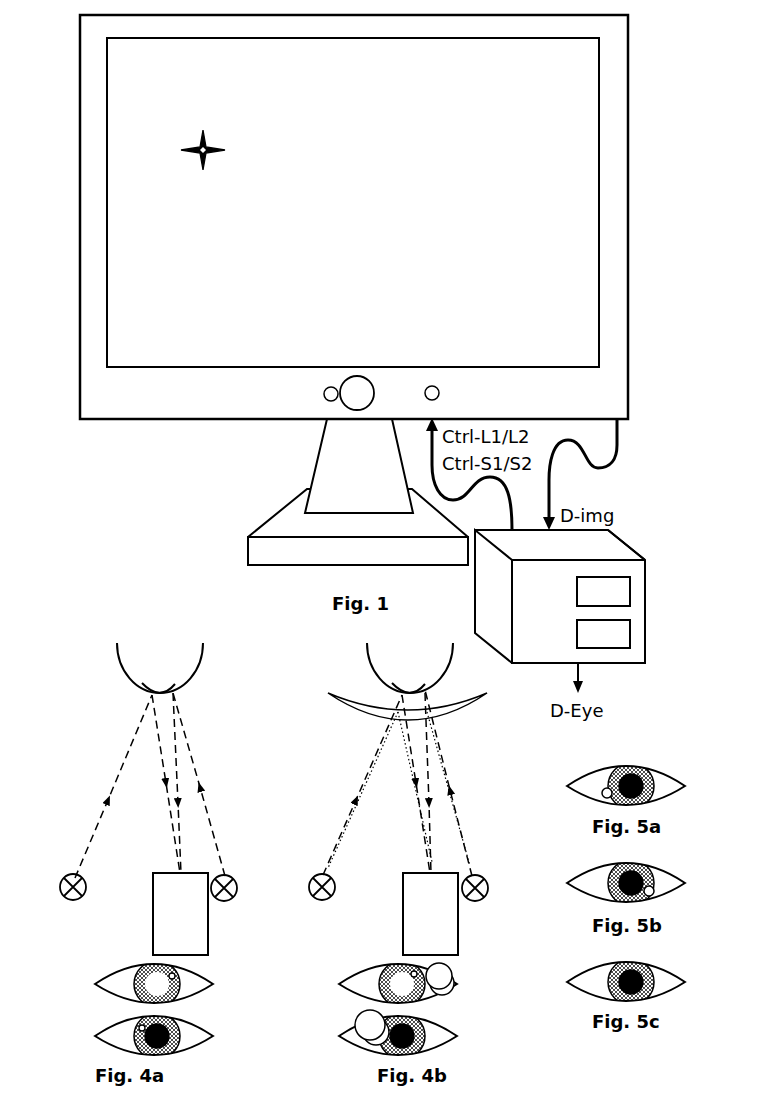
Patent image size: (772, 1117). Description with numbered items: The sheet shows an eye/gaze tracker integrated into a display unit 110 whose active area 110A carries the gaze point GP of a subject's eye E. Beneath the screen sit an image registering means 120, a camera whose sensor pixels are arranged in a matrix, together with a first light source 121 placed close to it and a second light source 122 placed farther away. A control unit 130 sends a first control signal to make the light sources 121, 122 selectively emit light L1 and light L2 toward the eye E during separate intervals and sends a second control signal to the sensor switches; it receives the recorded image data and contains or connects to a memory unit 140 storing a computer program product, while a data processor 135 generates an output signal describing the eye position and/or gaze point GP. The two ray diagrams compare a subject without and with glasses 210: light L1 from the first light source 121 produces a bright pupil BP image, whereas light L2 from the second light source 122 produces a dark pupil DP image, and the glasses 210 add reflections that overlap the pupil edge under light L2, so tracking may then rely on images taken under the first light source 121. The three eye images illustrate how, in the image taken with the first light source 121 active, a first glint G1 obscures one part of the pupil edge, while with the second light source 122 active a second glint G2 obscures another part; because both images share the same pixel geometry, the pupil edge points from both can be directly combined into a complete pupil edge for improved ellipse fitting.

In FIG. 1, the display unit 110 is at (354, 290).
In FIG. 1, the active area 110A is at (416, 202).
In FIG. 1, the gaze point GP is at (230, 139).
In FIG. 1, the image registering means 120 is at (331, 360).
In FIG. 4A, the image registering means 120 is at (151, 914).
In FIG. 4B, the image registering means 120 is at (400, 914).
In FIG. 1, the first light source 121 is at (295, 389).
In FIG. 4A, the first light source 121 is at (246, 904).
In FIG. 4B, the first light source 121 is at (496, 906).
In FIG. 1, the second light source 122 is at (468, 388).
In FIG. 4A, the second light source 122 is at (48, 867).
In FIG. 4B, the second light source 122 is at (297, 867).
In FIG. 1, the control unit 130 is at (575, 584).
In FIG. 1, the memory unit 140 is at (639, 588).
In FIG. 1, the data processor 135 is at (639, 631).
In FIG. 4A, the eye E is at (123, 668).
In FIG. 4B, the eye E is at (371, 668).
In FIG. 4A, the light from first light source L1 is at (199, 784).
In FIG. 4B, the light from first light source L1 is at (449, 783).
In FIG. 4A, the light from second light source L2 is at (113, 786).
In FIG. 4B, the light from second light source L2 is at (362, 785).
In FIG. 4B, the glasses 210 is at (378, 714).
In FIG. 4A, the bright pupil BP is at (118, 984).
In FIG. 4B, the bright pupil BP is at (422, 984).
In FIG. 4A, the dark pupil DP is at (118, 1036).
In FIG. 4B, the dark pupil DP is at (423, 1034).
In FIG. 5A, the dark pupil DP is at (647, 786).
In FIG. 5B, the dark pupil DP is at (647, 883).
In FIG. 5C, the dark pupil DP is at (647, 982).
In FIG. 5A, the first glint G1 is at (571, 804).
In FIG. 5B, the second glint G2 is at (687, 906).